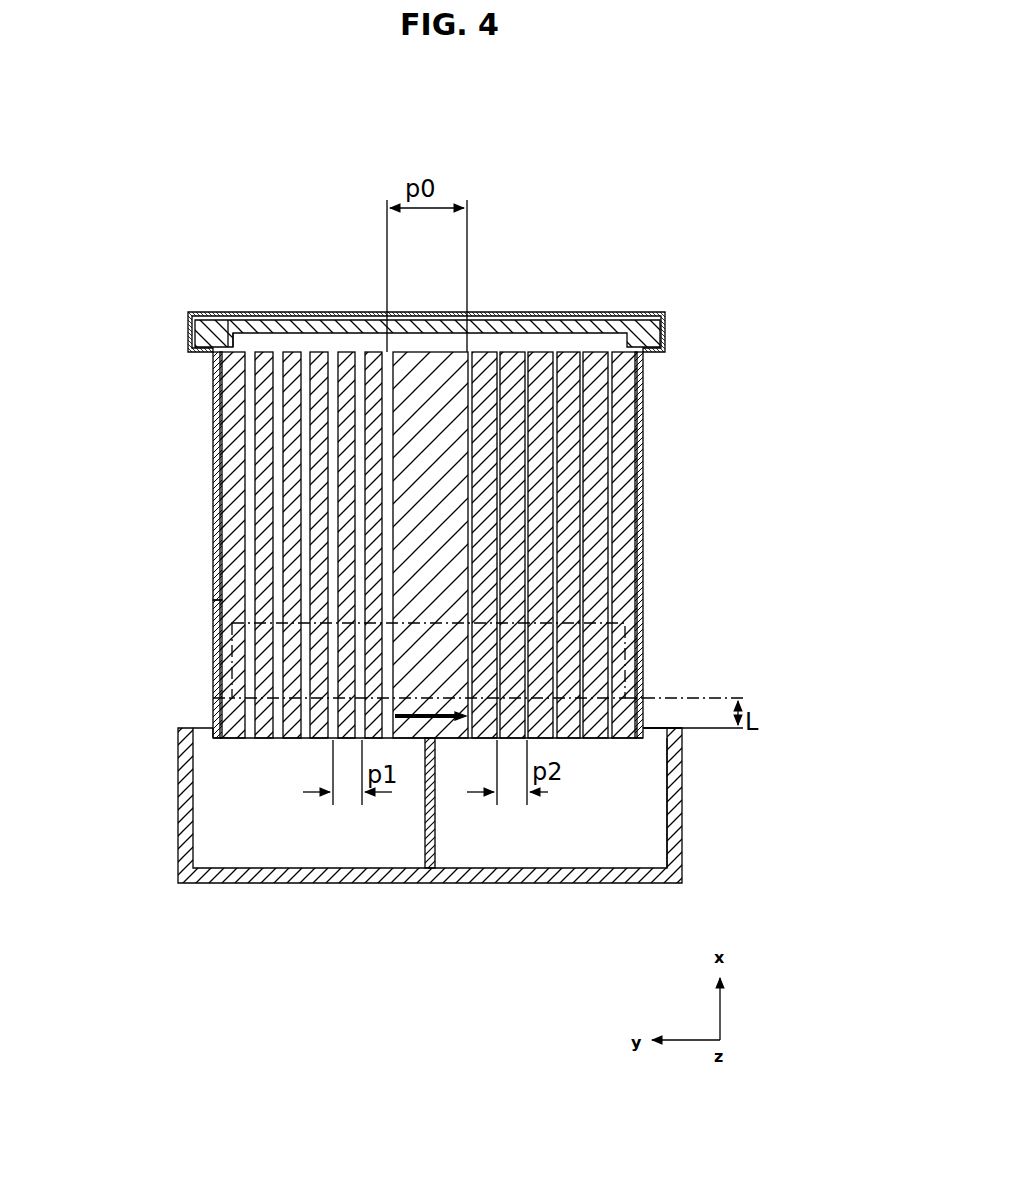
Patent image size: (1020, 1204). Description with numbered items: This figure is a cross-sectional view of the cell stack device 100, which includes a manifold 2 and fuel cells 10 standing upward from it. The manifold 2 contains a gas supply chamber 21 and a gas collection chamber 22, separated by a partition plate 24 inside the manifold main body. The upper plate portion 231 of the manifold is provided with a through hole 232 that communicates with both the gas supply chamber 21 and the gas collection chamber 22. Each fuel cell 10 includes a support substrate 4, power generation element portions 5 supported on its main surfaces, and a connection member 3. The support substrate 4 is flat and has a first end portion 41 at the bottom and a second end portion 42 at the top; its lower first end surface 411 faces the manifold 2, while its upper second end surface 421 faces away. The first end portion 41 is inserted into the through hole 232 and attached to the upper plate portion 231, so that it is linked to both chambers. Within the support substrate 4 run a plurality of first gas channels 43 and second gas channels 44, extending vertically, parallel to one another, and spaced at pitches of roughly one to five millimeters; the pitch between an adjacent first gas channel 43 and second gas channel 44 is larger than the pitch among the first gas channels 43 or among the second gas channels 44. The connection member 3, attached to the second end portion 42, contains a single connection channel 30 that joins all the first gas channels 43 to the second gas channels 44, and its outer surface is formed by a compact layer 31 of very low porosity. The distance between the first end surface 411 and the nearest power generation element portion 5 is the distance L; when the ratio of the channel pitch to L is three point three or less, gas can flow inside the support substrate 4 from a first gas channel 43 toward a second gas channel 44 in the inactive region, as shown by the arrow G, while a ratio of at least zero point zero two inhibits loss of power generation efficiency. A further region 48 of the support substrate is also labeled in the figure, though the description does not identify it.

The cell stack device 100 is at (608, 194).
The manifold 2 is at (171, 810).
The gas supply chamber 21 is at (322, 834).
The gas collection chamber 22 is at (572, 828).
The partition plate 24 is at (425, 835).
The upper plate portion 231 is at (660, 727).
The through hole 232 is at (612, 742).
The connection member 3 is at (648, 308).
The connection channel 30 is at (427, 286).
The compact layer 31 is at (545, 320).
The support substrate 4 is at (211, 432).
The first end portion 41 is at (213, 718).
The first end surface 411 is at (237, 742).
The second end portion 42 is at (165, 457).
The second end surface 421 is at (197, 331).
The first gas channels 43 is at (247, 553).
The second gas channels 44 is at (608, 551).
The side wall lower portion 48 is at (213, 608).
The power generation element portions 5 is at (228, 644).
The fuel cell 10 is at (191, 480).
The arrow G is at (437, 718).